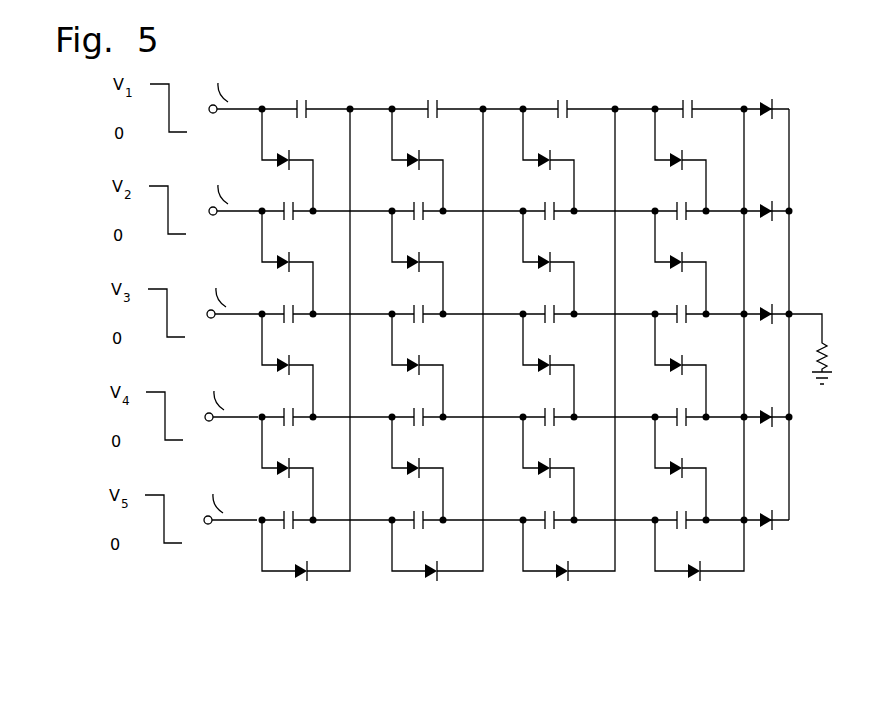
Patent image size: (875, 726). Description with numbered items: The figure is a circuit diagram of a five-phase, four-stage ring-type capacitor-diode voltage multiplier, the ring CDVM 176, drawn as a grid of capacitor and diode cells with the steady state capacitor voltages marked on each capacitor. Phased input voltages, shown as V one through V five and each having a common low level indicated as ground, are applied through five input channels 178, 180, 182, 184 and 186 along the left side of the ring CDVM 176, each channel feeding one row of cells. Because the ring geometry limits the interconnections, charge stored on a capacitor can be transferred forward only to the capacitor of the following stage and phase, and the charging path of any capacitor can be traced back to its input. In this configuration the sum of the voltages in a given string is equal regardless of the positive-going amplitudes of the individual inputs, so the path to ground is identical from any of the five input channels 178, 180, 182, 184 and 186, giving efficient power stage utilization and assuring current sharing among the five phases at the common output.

The five-phase, four-stage ring CDVM 176 is at (790, 82).
The input channel 178 is at (232, 85).
The input channel 180 is at (230, 187).
The input channel 182 is at (228, 290).
The input channel 184 is at (226, 393).
The input channel 186 is at (225, 496).